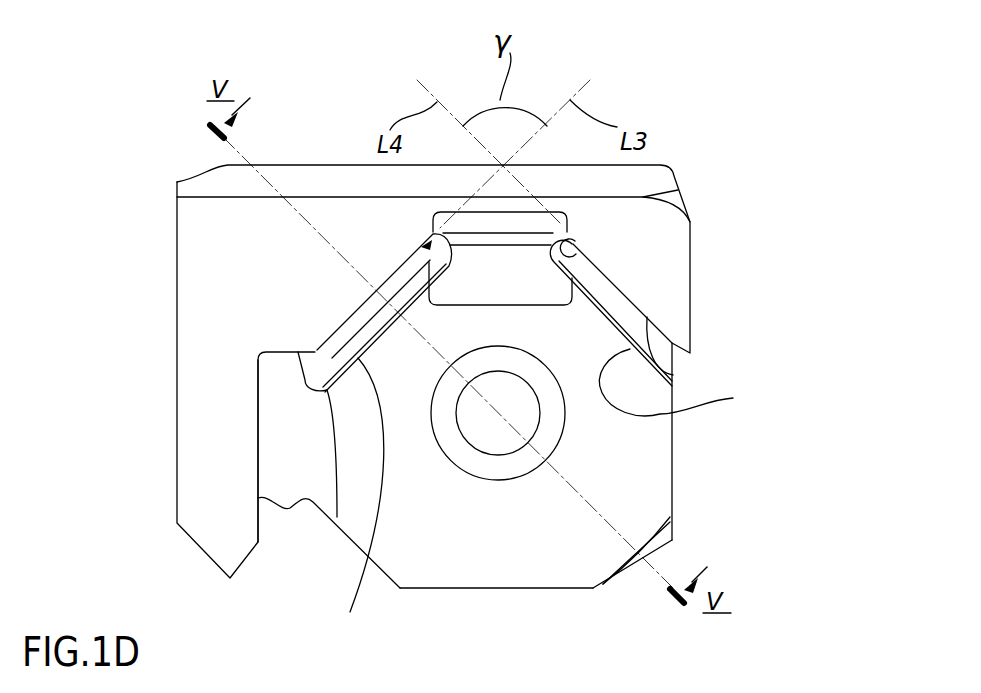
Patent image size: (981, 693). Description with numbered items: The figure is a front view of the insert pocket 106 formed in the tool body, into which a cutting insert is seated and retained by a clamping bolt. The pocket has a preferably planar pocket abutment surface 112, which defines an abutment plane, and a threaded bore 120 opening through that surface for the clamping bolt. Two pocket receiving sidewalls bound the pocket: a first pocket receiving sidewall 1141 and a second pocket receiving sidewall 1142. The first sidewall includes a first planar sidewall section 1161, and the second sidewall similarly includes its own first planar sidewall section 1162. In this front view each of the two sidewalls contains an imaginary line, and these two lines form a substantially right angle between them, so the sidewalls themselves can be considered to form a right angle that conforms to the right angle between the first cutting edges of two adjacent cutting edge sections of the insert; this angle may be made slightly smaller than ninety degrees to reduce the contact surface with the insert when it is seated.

The insert pocket 106 is at (682, 450).
The pocket abutment surface 112 is at (463, 550).
The first pocket receiving sidewall 1141 is at (483, 430).
The second pocket receiving sidewall 1142 is at (696, 386).
The first planar sidewall section 1161 is at (368, 303).
The first planar sidewall section 1162 is at (657, 350).
The threaded bore 120 is at (355, 503).